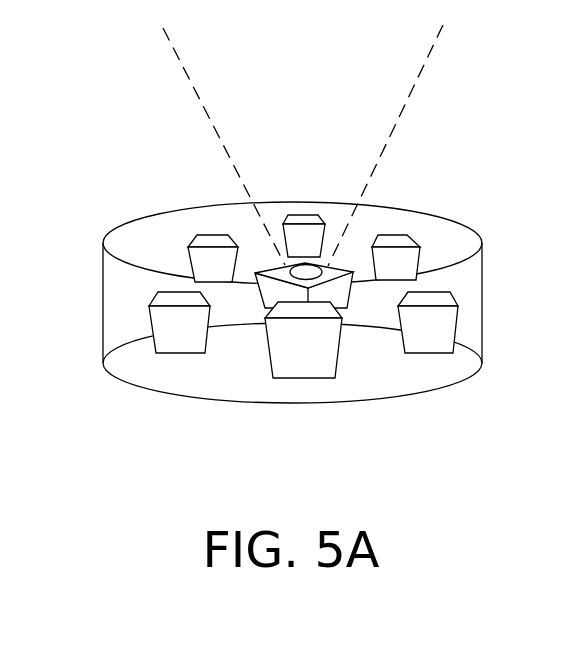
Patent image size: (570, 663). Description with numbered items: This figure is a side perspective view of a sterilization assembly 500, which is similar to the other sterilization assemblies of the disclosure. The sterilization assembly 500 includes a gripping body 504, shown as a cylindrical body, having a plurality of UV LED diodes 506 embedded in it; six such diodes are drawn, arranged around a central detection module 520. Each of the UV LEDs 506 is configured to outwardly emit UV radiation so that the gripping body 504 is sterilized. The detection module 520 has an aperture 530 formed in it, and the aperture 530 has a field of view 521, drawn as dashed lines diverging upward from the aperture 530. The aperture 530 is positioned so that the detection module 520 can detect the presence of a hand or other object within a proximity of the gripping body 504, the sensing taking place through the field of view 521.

The sterilization assembly 500 is at (435, 213).
The gripping body 504 is at (98, 270).
The UV LED diodes 506 is at (378, 233).
The detection module 520 is at (367, 302).
The field of view 521 is at (432, 48).
The aperture 530 is at (295, 262).